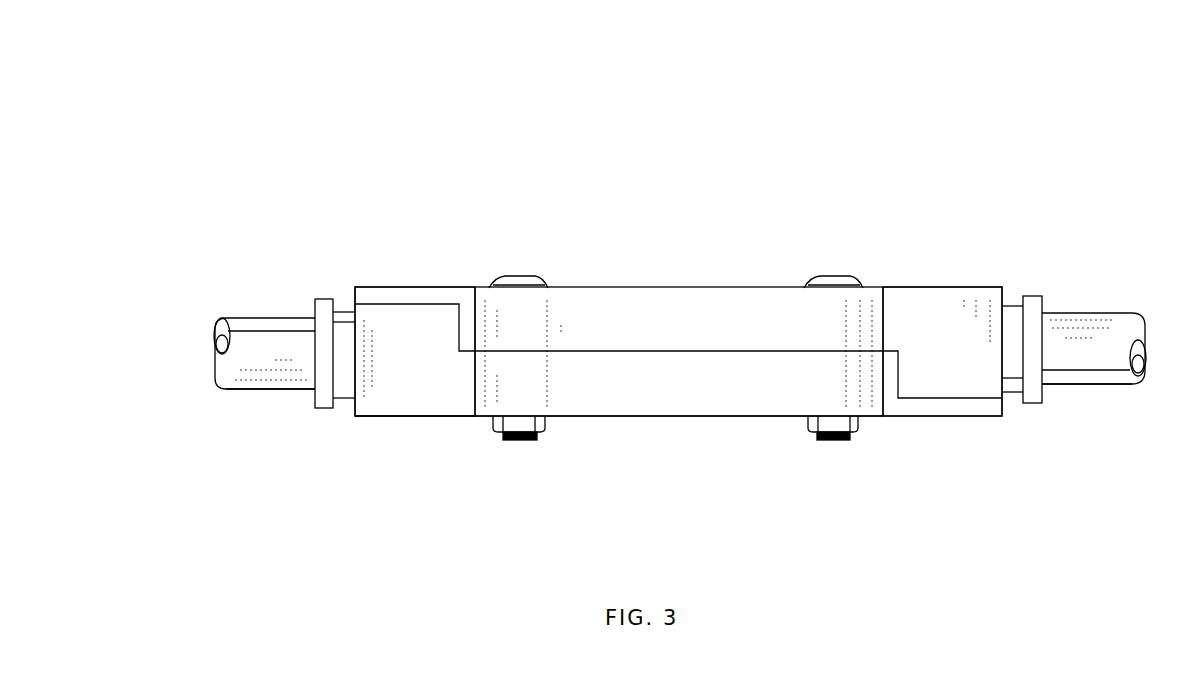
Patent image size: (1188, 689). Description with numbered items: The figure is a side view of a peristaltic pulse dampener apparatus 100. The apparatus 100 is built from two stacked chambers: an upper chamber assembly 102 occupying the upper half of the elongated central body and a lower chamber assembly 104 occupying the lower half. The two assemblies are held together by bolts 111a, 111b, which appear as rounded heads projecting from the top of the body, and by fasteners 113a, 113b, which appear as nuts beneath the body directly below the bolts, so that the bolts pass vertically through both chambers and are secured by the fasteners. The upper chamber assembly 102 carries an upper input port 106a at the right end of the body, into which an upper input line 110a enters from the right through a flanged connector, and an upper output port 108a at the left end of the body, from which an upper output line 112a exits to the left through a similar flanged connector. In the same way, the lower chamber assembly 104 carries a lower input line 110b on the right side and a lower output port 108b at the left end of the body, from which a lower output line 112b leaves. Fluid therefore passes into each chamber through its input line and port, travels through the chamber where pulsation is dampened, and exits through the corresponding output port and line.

The peristaltic pulse dampener apparatus 100 is at (363, 125).
The upper chamber assembly 102 is at (675, 287).
The lower chamber assembly 104 is at (703, 417).
The upper input port 106a is at (930, 287).
The upper output port 108a is at (405, 288).
The lower output port 108b is at (390, 417).
The upper input line 110a is at (1097, 313).
The lower input line 110b is at (1098, 386).
The bolt 111a is at (530, 277).
The bolt 111b is at (835, 277).
The upper output line 112a is at (247, 318).
The lower output line 112b is at (253, 390).
The fastener 113a is at (545, 423).
The fastener 113b is at (858, 423).